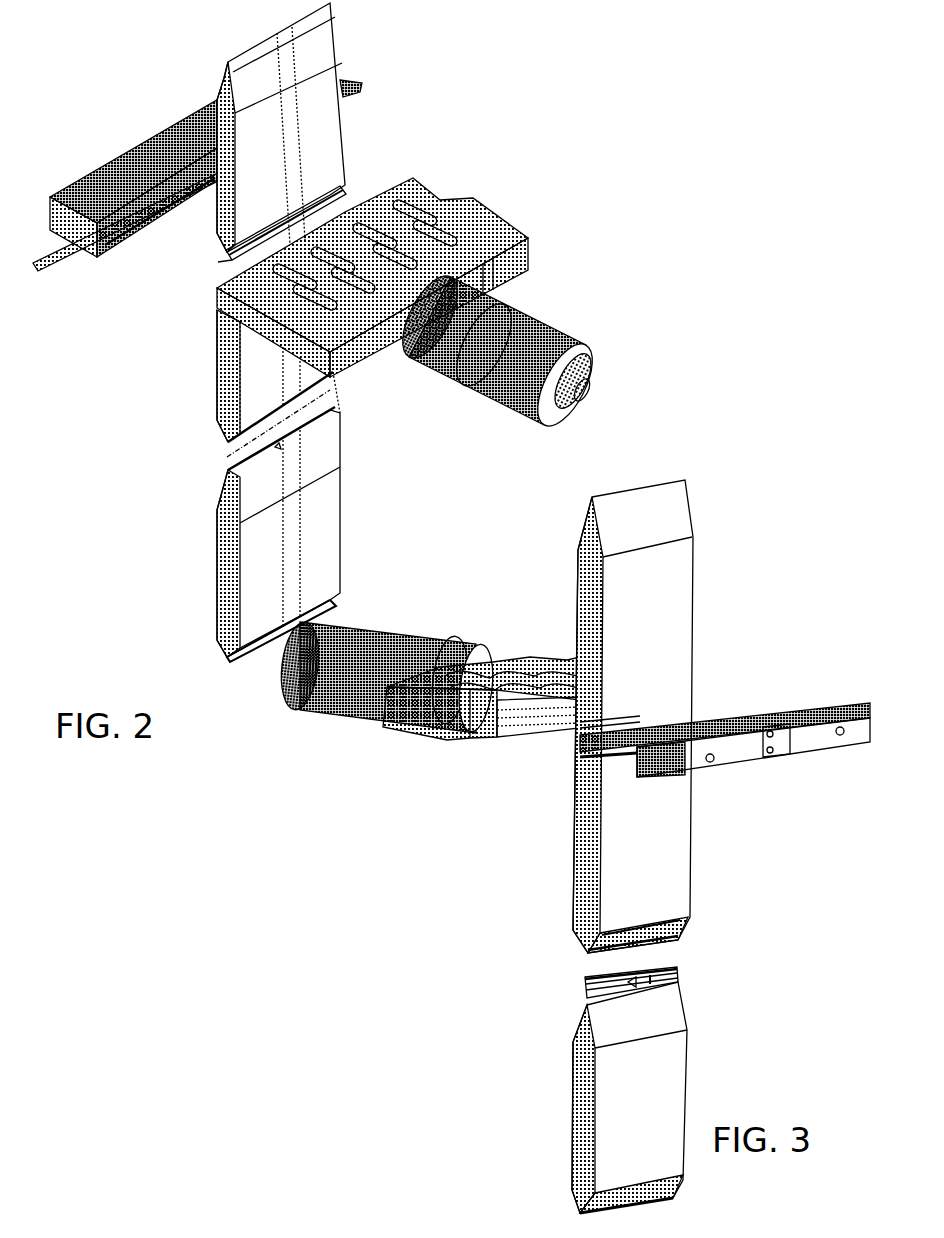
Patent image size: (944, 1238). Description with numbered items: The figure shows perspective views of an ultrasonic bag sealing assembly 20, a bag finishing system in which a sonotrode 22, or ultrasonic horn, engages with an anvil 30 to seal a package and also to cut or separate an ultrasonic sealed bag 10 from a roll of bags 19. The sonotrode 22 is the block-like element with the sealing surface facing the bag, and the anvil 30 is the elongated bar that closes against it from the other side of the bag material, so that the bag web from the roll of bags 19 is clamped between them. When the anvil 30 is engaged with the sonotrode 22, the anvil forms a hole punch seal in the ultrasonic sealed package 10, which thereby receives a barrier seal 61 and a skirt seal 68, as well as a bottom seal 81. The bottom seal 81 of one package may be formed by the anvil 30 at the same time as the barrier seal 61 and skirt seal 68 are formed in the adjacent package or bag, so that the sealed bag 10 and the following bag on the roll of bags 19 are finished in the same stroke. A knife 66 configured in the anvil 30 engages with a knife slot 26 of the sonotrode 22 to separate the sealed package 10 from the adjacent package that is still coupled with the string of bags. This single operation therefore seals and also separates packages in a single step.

In FIG. 2, the ultrasonic sealed bag 10 is at (220, 527).
In FIG. 3, the ultrasonic sealed bag 10 is at (613, 1077).
In FIG. 2, the roll of bags 19 is at (305, 60).
In FIG. 3, the roll of bags 19 is at (670, 520).
In FIG. 2, the ultrasonic bag sealing assembly 20 is at (650, 106).
In FIG. 3, the ultrasonic bag sealing assembly 20 is at (773, 617).
In FIG. 2, the sonotrode 22 is at (418, 195).
In FIG. 3, the sonotrode 22 is at (488, 670).
In FIG. 3, the knife slot 26 is at (512, 742).
In FIG. 2, the anvil 30 is at (100, 173).
In FIG. 3, the anvil 30 is at (822, 715).
In FIG. 2, the barrier seal 61 is at (333, 200).
In FIG. 3, the barrier seal 61 is at (677, 975).
In FIG. 2, the knife 66 is at (42, 280).
In FIG. 3, the skirt seal 68 is at (665, 970).
In FIG. 2, the bottom seal 81 is at (233, 657).
In FIG. 3, the bottom seal 81 is at (580, 1217).